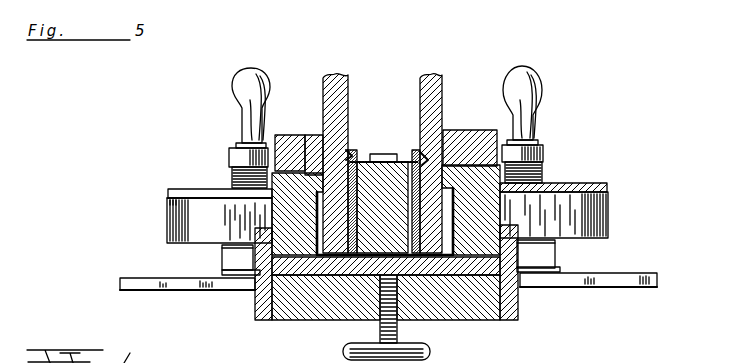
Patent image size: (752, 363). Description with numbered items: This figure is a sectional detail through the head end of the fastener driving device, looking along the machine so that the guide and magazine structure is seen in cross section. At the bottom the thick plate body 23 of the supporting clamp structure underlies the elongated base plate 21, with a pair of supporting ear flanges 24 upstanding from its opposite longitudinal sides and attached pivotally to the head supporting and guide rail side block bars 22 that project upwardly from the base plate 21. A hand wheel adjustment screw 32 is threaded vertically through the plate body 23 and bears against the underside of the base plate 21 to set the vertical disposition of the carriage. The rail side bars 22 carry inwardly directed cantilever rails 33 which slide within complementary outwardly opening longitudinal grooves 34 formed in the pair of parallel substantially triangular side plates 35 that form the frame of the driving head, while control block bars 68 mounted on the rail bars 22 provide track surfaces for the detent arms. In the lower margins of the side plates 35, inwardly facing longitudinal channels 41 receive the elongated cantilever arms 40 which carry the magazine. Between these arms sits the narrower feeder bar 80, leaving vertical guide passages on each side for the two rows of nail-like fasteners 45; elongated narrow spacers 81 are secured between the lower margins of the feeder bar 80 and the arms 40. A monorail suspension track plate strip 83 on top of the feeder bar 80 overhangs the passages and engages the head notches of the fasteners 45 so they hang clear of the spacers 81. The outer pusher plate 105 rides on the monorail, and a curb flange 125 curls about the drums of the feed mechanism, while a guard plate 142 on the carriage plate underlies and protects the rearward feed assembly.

The base plate 21 is at (463, 270).
The head supporting and guide rail side block bars 22 is at (262, 268).
The plate body 23 is at (486, 315).
The supporting ear flanges 24 is at (520, 304).
The hand wheel adjustment screw 32 is at (432, 352).
The cantilever rails 33 is at (315, 176).
The longitudinal grooves 34 is at (330, 176).
The side plates 35 is at (342, 75).
The cantilever arms 40 is at (350, 150).
The longitudinal channels 41 is at (352, 157).
The fasteners 45 is at (428, 158).
The control block bars 68 is at (280, 137).
The feeder bar 80 is at (400, 154).
The spacers 81 is at (338, 262).
The monorail suspension track plate strip 83 is at (372, 160).
The pusher plate 105 is at (190, 205).
The curb flange 125 is at (587, 208).
The guard plate 142 is at (600, 286).